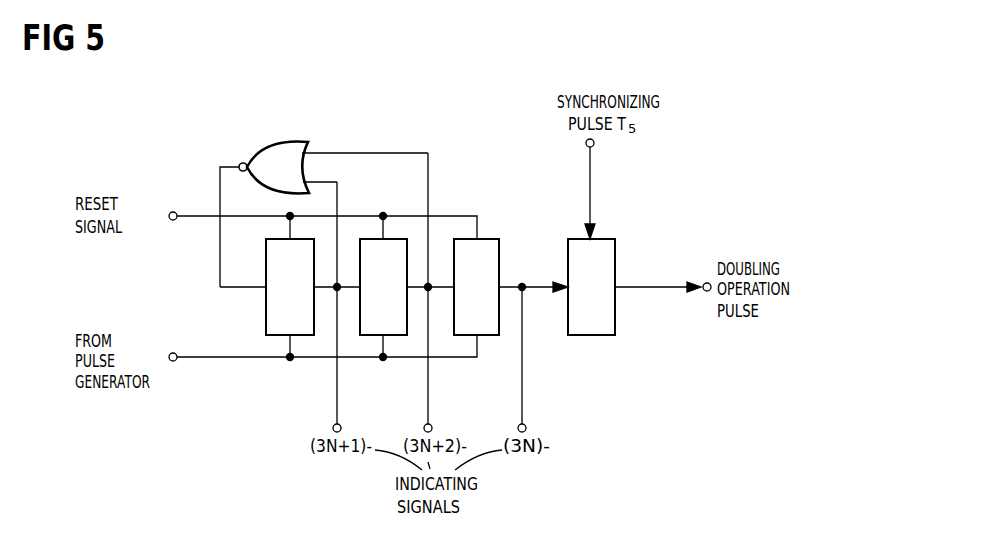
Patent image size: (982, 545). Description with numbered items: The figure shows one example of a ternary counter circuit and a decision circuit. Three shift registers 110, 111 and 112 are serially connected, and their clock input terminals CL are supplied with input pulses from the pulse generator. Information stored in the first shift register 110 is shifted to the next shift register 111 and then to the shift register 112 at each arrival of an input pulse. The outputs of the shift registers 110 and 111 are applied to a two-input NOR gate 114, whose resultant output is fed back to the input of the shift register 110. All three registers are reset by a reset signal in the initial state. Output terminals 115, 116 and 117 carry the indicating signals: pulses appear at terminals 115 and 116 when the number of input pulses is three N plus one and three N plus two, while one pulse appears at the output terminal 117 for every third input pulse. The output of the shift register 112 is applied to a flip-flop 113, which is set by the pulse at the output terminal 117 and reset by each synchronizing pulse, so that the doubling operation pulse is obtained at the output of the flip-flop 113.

The shift register 110 is at (266, 250).
The shift register 111 is at (360, 250).
The shift register 112 is at (454, 250).
The flip-flop 113 is at (568, 250).
The 2-input NOR gate 114 is at (283, 138).
The output terminal 115 is at (340, 425).
The output terminal 116 is at (431, 425).
The output terminal 117 is at (525, 425).